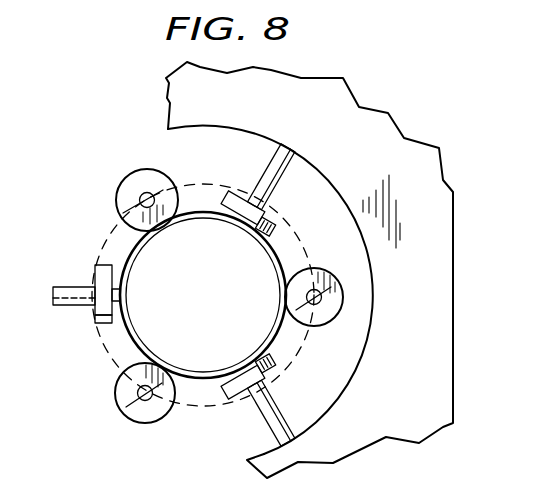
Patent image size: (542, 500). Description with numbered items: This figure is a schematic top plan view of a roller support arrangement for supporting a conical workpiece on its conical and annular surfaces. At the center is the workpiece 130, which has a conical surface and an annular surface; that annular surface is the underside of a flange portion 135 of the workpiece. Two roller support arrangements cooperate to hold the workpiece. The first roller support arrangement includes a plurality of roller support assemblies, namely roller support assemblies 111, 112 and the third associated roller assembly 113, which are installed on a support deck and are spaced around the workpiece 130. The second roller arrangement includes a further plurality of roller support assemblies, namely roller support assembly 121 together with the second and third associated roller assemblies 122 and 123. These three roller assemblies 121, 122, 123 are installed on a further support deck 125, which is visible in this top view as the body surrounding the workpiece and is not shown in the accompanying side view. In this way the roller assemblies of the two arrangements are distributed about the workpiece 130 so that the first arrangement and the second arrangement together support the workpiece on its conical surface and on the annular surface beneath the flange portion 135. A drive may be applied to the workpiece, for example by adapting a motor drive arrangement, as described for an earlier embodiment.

The roller support assembly 111 is at (140, 413).
The roller support assembly 112 is at (333, 310).
The roller assembly 113 is at (130, 183).
The roller support assembly 121 is at (92, 317).
The roller assembly 122 is at (230, 407).
The roller assembly 123 is at (295, 230).
The further support deck 125 is at (432, 384).
The workpiece 130 is at (150, 258).
The flange portion 135 is at (113, 352).